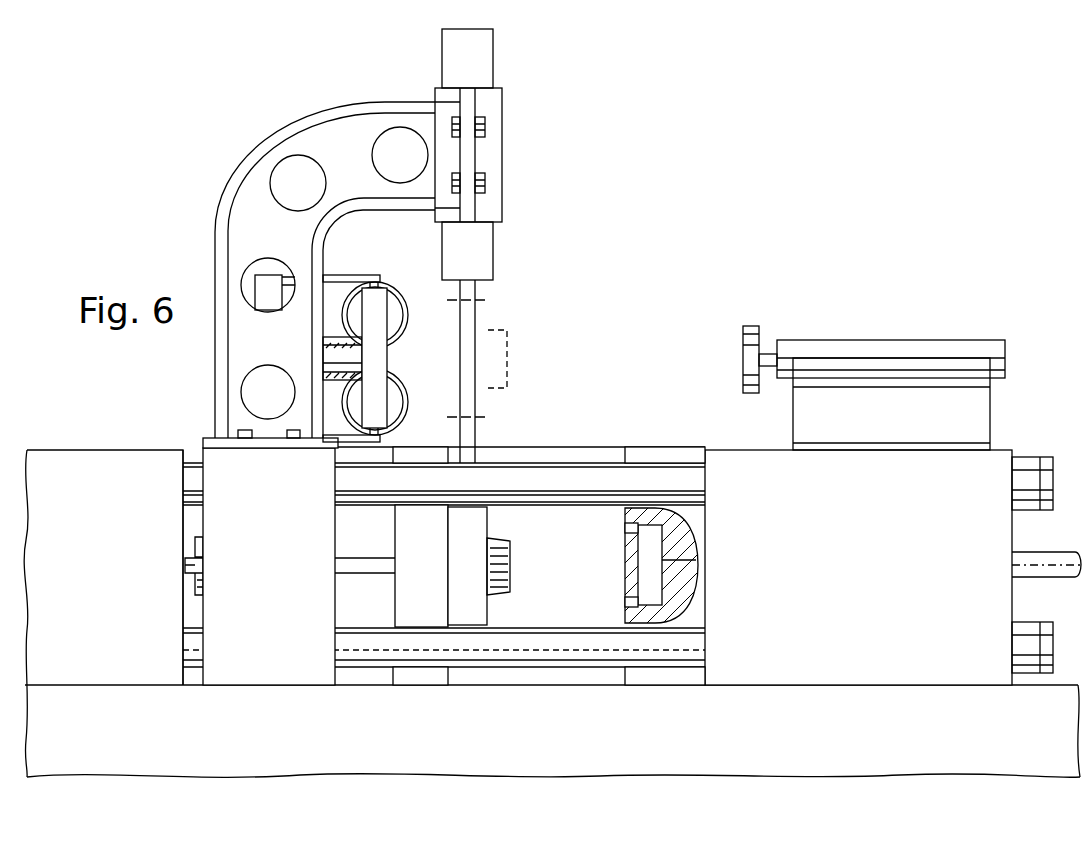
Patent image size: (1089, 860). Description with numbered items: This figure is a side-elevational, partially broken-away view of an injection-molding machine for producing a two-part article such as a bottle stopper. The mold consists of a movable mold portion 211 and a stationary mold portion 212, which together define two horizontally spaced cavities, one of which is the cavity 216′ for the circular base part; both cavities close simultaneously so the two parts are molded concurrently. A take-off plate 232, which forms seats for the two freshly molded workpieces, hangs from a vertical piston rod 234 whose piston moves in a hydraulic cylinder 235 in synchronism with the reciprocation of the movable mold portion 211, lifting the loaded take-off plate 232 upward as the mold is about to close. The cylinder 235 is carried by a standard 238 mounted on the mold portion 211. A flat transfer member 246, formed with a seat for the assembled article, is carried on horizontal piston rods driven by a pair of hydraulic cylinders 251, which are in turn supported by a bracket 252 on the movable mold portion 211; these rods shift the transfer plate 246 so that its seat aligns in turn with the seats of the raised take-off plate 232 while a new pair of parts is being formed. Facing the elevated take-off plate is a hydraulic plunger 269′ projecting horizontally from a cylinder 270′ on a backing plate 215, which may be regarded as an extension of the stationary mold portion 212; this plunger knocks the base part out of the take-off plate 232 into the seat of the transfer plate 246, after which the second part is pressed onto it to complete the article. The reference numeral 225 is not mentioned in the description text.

The movable mold portion 211 is at (270, 665).
The stationary mold portion 212 is at (640, 672).
The backing plate 215 is at (991, 463).
The cavity 216′ is at (625, 530).
The rail support 225 is at (413, 678).
The take-off plate 232 is at (477, 620).
The piston rod 234 is at (477, 440).
The hydraulic cylinder 235 is at (495, 53).
The standard 238 is at (215, 222).
The transfer member 246 is at (385, 356).
The hydraulic cylinders 251 is at (393, 300).
The bracket 252 is at (339, 292).
The hydraulic plunger 269′ is at (750, 326).
The cylinder 270′ is at (887, 340).